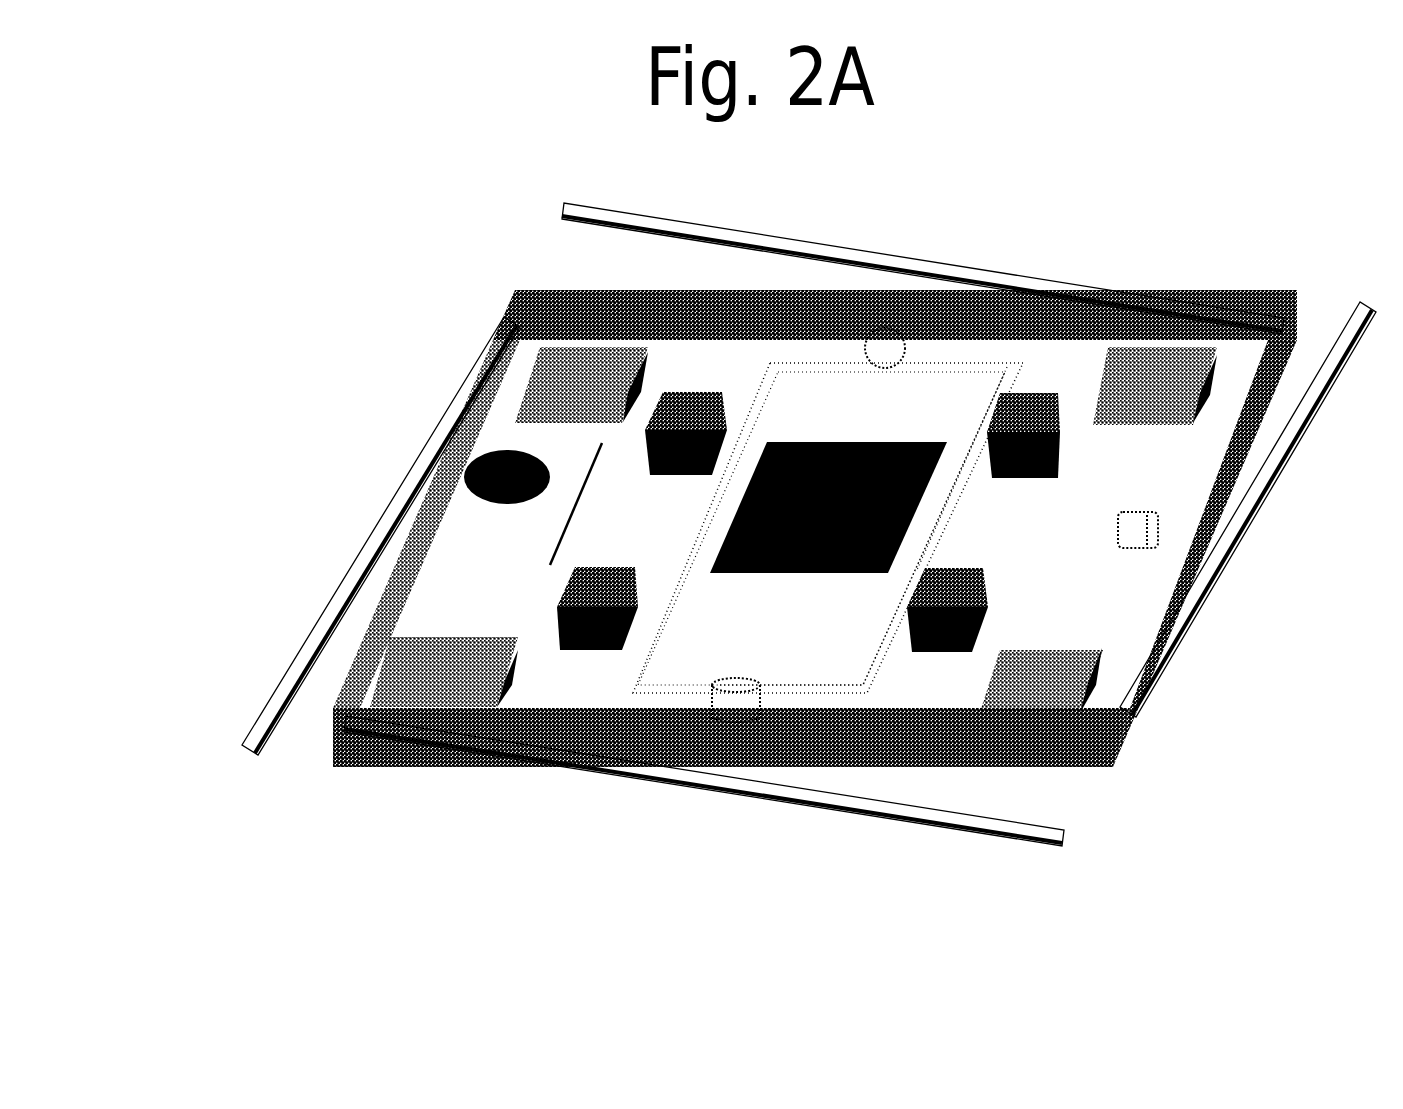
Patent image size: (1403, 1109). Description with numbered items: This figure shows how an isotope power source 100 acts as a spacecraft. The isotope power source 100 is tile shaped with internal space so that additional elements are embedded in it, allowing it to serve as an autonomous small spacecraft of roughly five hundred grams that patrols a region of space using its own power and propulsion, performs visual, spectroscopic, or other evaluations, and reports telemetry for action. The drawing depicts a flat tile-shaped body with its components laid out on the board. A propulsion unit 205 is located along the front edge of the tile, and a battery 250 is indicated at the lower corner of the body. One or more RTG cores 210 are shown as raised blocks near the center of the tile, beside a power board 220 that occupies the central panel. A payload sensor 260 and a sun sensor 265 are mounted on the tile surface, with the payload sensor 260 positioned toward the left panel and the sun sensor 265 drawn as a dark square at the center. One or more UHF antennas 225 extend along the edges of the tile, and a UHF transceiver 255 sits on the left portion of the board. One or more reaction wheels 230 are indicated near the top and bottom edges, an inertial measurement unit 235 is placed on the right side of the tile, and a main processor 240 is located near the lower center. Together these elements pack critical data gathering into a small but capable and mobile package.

The isotope power source 100 is at (226, 140).
The propulsion unit 205 is at (425, 713).
The RTG core 210 is at (690, 388).
The power board 220 is at (832, 380).
The UHF antenna 225 is at (312, 612).
The reaction wheel 230 is at (745, 726).
The inertial measurement unit 235 is at (1150, 598).
The main processor 240 is at (870, 690).
The battery 250 is at (347, 768).
The UHF transceiver 255 is at (423, 580).
The payload sensor 260 is at (433, 478).
The sun sensor 265 is at (917, 450).